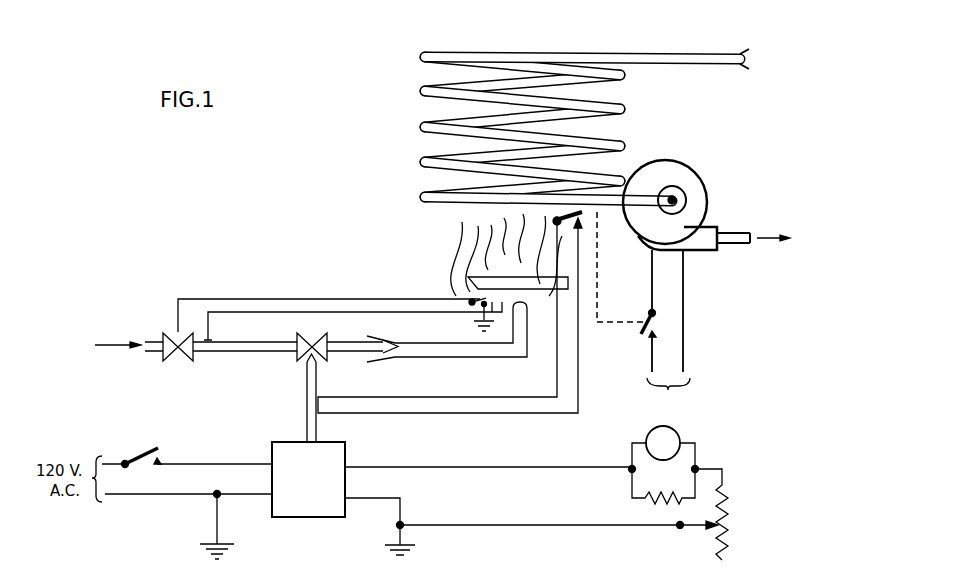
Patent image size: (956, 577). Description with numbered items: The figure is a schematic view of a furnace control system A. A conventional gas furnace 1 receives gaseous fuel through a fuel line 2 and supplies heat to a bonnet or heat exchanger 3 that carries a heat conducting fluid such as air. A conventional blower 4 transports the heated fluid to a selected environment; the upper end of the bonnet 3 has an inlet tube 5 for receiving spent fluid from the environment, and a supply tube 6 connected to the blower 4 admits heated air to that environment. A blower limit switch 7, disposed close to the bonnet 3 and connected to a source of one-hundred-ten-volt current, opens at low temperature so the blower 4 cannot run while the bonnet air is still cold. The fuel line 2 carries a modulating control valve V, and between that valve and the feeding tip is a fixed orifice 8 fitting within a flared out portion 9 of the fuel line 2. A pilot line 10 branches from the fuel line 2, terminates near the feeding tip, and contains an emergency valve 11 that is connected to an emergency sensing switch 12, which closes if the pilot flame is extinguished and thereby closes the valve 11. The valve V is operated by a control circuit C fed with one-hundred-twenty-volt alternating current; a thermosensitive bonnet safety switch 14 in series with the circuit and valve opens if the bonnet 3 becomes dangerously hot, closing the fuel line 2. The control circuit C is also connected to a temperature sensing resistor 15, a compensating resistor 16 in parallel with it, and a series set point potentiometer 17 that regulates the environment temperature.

The gas furnace 1 is at (441, 259).
The fuel line 2 is at (490, 360).
The bonnet 3 is at (424, 160).
The blower 4 is at (686, 180).
The inlet tube 5 is at (648, 53).
The supply tube 6 is at (735, 232).
The blower limit switch 7 is at (648, 320).
The fixed orifice 8 is at (389, 361).
The flared out portion 9 is at (378, 338).
The pilot line 10 is at (388, 300).
The emergency valve 11 is at (182, 334).
The emergency sensing switch 12 is at (468, 301).
The bonnet safety switch 14 is at (584, 222).
The temperature sensing resistor 15 is at (682, 432).
The compensating resistor 16 is at (645, 500).
The set point potentiometer 17 is at (727, 526).
The furnace control system A is at (317, 255).
The modulating control valve V is at (305, 335).
The control circuit C is at (350, 452).